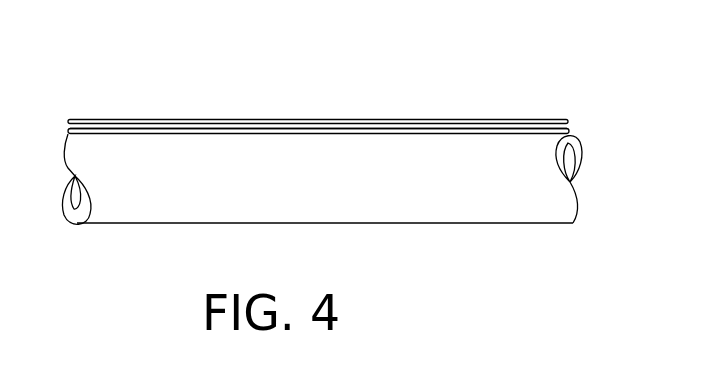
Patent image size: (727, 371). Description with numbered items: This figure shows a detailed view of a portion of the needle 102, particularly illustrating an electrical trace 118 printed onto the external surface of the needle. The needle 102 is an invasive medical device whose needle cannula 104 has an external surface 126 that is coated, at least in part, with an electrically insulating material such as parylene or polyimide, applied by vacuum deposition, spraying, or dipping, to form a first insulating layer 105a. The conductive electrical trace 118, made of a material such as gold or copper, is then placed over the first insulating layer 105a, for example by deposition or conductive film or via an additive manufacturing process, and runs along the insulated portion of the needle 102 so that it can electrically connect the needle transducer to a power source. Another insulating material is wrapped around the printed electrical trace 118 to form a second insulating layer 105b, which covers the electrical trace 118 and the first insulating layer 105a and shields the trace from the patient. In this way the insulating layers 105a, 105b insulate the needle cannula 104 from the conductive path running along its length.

The needle 102 is at (328, 161).
The needle cannula 104 is at (492, 235).
The first insulating layer 105a is at (394, 134).
The second insulating layer 105b is at (168, 119).
The electrical trace 118 is at (288, 128).
The external surface 126 is at (160, 203).